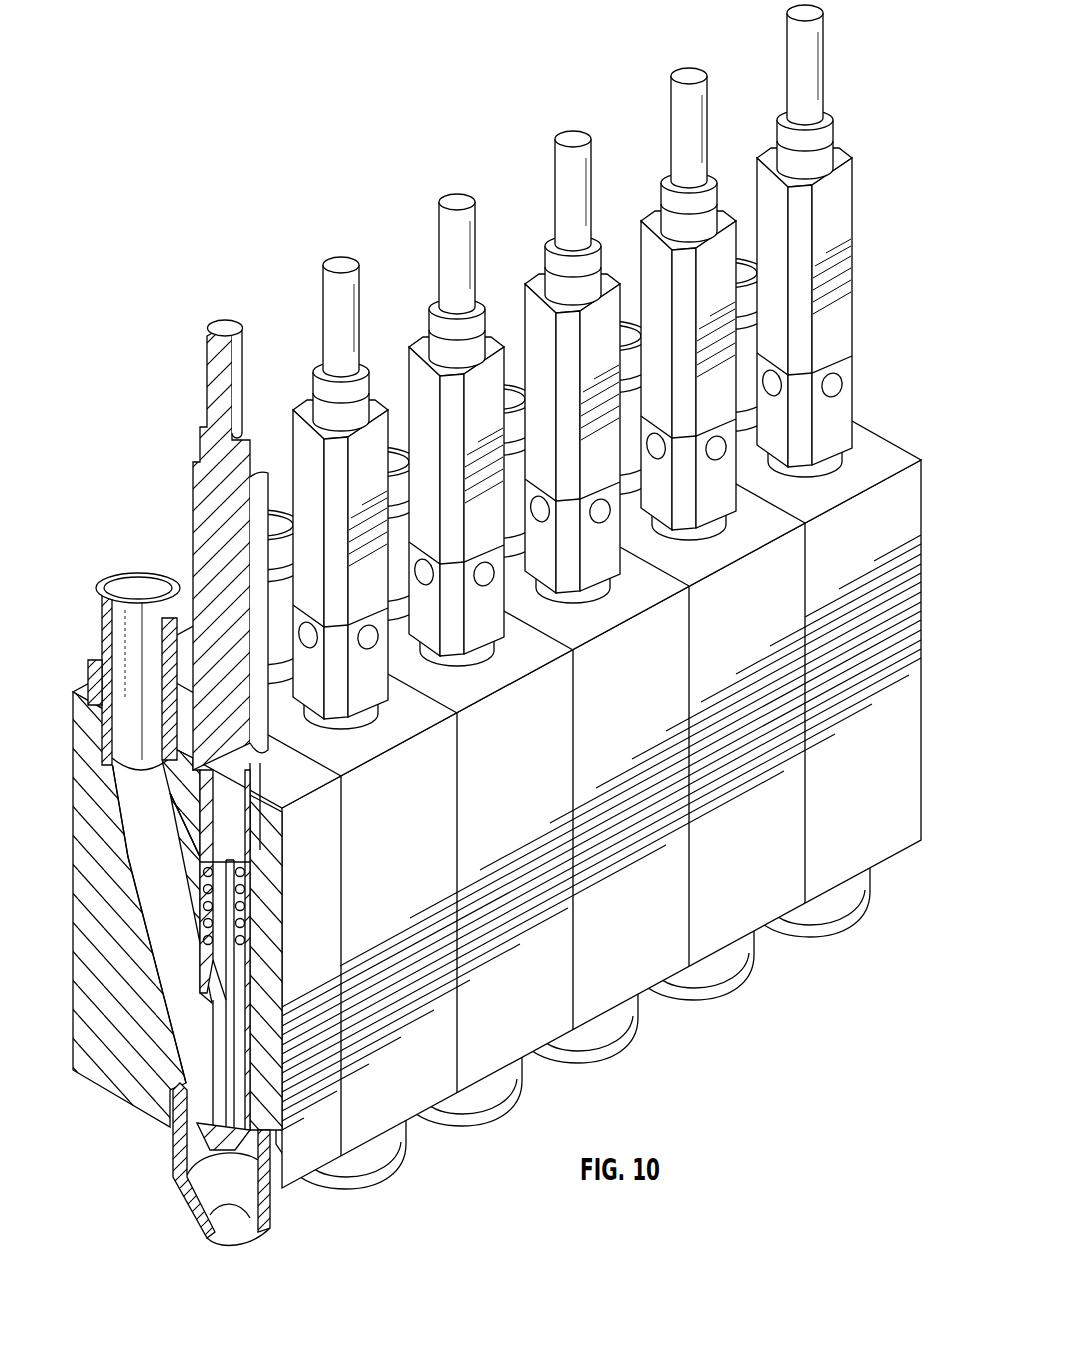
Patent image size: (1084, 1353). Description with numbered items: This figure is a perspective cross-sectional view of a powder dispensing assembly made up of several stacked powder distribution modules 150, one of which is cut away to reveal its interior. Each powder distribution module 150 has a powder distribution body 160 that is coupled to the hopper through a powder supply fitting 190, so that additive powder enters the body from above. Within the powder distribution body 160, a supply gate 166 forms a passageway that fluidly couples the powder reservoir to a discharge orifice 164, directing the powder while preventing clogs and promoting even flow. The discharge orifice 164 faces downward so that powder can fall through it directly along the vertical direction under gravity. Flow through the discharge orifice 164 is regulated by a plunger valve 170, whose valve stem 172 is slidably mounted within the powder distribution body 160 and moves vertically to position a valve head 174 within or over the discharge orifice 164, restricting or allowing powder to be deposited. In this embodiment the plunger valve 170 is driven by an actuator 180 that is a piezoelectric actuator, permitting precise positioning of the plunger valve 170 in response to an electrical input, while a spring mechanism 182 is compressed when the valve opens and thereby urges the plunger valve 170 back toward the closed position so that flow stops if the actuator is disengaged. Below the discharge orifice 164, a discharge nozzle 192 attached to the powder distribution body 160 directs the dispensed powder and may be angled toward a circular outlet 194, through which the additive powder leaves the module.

The powder distribution module 150 is at (762, 815).
The powder distribution body 160 is at (100, 975).
The discharge orifice 164 is at (198, 1152).
The supply gate 166 is at (188, 996).
The plunger valve 170 is at (232, 1040).
The valve stem 172 is at (224, 975).
The valve head 174 is at (228, 1143).
The actuator 180 is at (832, 256).
The spring mechanism 182 is at (243, 902).
The powder supply fitting 190 is at (118, 589).
The discharge nozzle 192 is at (755, 972).
The outlet 194 is at (228, 1252).